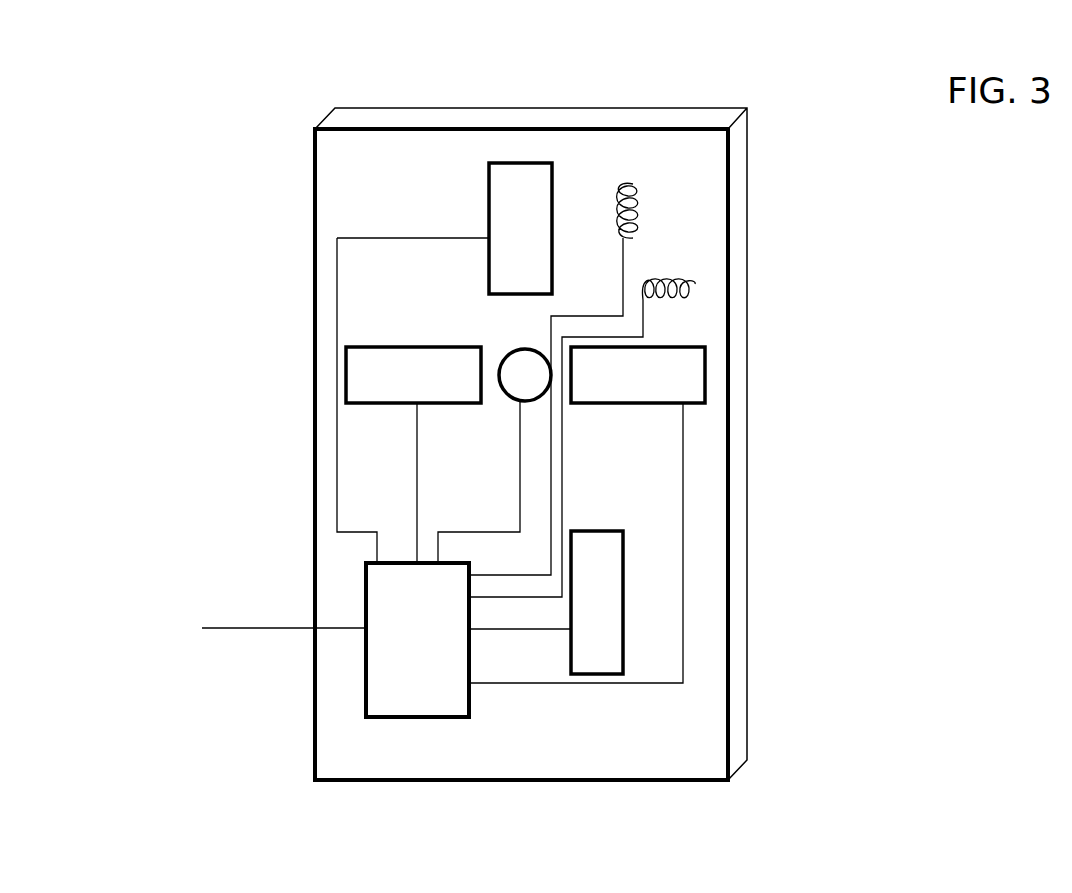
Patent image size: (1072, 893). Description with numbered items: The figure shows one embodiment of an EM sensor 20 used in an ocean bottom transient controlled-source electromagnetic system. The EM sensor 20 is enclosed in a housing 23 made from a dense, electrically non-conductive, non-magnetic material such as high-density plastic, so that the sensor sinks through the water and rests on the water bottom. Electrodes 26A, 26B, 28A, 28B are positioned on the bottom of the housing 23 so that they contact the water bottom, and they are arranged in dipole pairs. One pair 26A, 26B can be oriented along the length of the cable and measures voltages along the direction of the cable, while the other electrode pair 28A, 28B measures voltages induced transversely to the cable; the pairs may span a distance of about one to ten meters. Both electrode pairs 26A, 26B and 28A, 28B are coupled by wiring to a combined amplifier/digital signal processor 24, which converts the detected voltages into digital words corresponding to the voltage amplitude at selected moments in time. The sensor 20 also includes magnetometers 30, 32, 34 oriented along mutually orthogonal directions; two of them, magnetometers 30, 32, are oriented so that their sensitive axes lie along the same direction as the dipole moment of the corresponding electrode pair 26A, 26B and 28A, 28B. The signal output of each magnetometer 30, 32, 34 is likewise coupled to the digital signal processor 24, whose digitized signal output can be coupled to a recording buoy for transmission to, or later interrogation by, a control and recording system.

The EM sensor 20 is at (447, 825).
The housing 23 is at (583, 783).
The combined amplifier/digital signal processor 24 is at (365, 693).
The electrode 26A is at (365, 368).
The electrode 26B is at (683, 371).
The electrode 28A is at (602, 586).
The electrode 28B is at (518, 205).
The magnetometer 30 is at (633, 207).
The magnetometer 32 is at (695, 283).
The magnetometer 34 is at (530, 380).